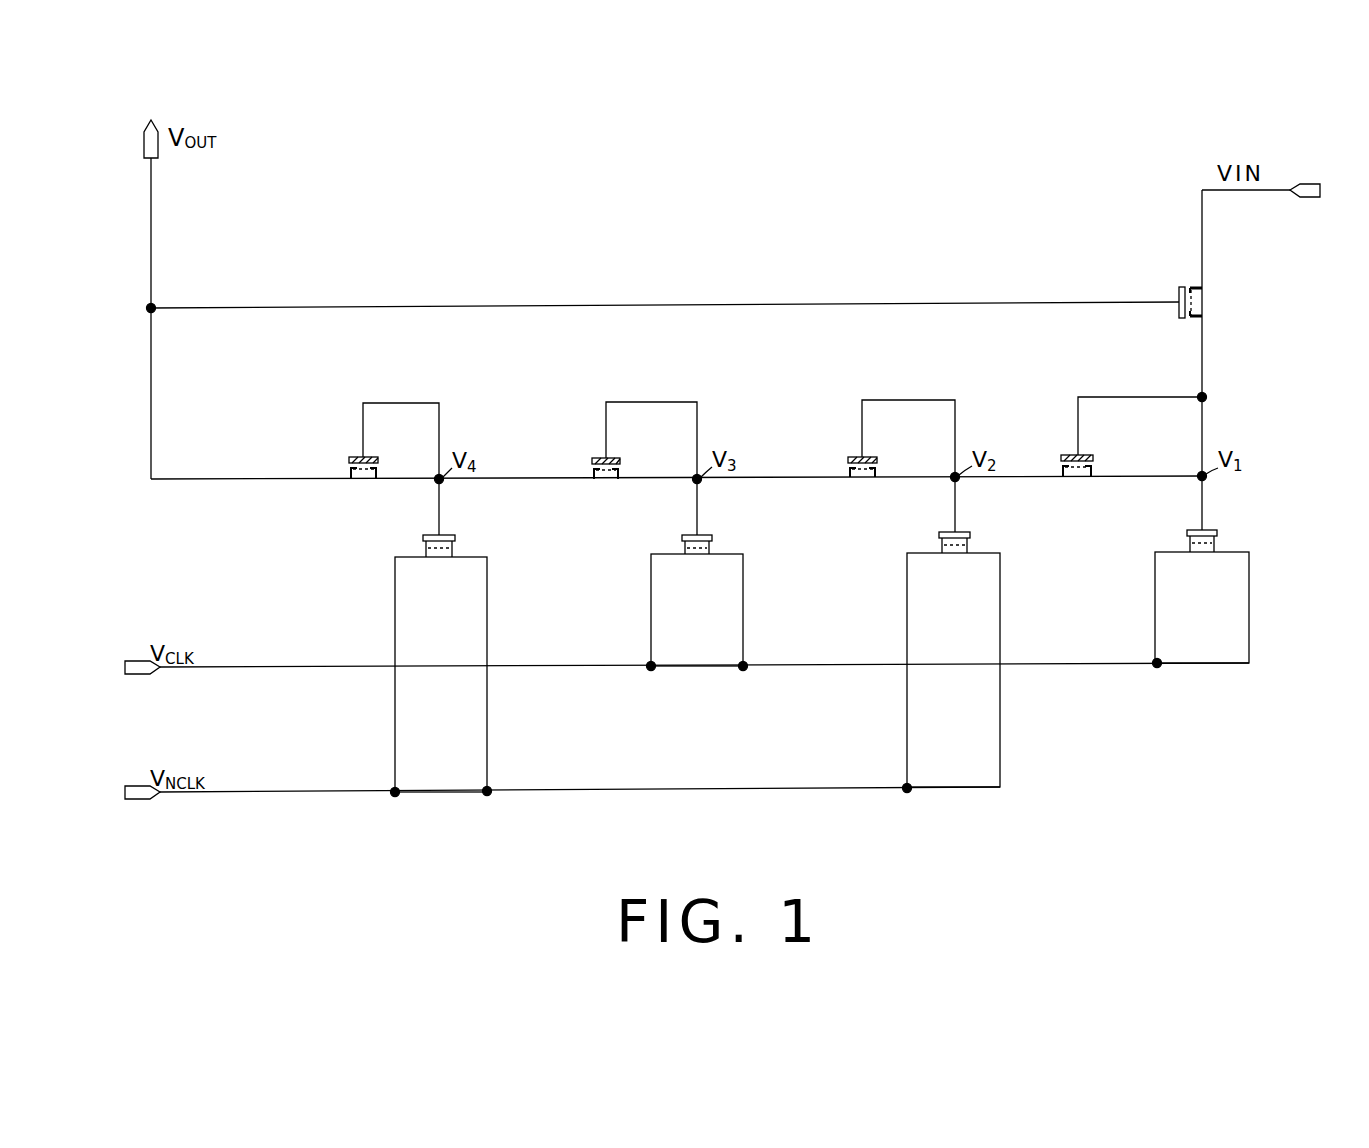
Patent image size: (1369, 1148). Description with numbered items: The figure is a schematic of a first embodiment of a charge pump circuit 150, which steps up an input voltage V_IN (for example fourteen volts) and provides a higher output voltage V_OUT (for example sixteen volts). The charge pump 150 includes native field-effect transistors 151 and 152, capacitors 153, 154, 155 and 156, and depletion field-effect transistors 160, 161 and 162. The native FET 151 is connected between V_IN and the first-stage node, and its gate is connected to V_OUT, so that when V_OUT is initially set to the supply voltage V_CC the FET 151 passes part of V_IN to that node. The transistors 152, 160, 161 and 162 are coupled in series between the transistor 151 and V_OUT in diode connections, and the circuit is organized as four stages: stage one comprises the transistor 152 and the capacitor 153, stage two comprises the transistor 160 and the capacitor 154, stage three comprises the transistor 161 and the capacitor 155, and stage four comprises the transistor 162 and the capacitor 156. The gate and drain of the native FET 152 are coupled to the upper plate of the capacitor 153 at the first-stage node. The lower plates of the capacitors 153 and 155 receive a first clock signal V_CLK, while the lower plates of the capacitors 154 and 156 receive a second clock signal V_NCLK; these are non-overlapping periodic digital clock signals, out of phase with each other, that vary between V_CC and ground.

The charge pump circuit 150 is at (1056, 162).
The native field-effect transistor 151 is at (1178, 298).
The native field-effect transistor 152 is at (1084, 457).
The capacitor 153 is at (1210, 535).
The capacitor 154 is at (963, 537).
The capacitor 155 is at (706, 539).
The capacitor 156 is at (446, 539).
The depletion field-effect transistor 160 is at (867, 459).
The depletion field-effect transistor 161 is at (609, 460).
The depletion field-effect transistor 162 is at (366, 460).